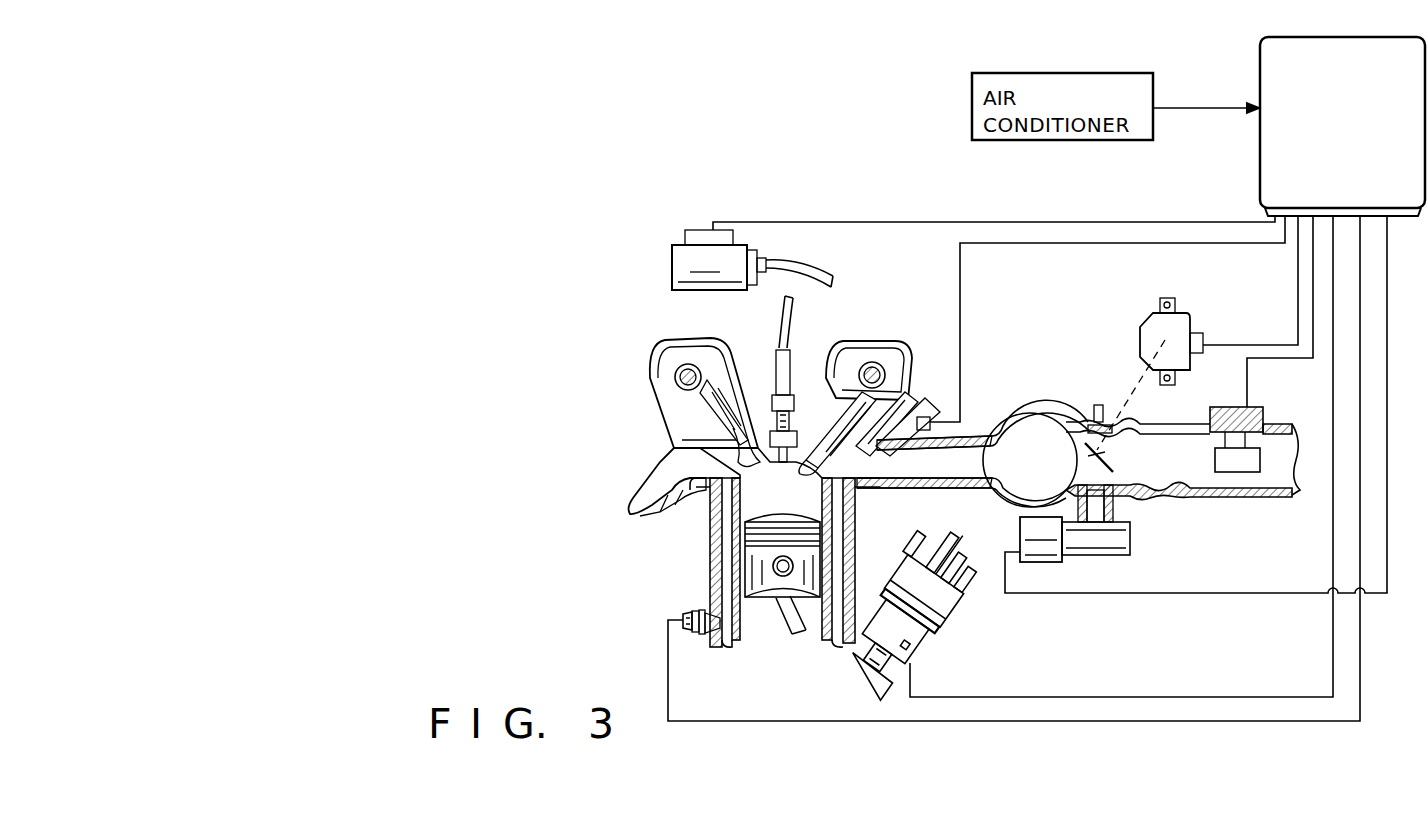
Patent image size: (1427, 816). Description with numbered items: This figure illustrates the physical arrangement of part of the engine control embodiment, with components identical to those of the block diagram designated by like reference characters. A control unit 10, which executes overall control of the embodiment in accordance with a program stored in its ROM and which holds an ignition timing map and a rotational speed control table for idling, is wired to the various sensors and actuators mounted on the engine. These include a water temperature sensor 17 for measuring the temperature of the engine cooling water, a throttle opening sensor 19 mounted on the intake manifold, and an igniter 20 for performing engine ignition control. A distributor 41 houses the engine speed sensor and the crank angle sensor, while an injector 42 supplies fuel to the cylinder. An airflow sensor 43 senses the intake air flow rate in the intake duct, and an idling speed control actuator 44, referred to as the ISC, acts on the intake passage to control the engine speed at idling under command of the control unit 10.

The control unit 10 is at (1263, 46).
The water temperature sensor 17 is at (692, 612).
The throttle opening sensor 19 is at (1190, 316).
The igniter 20 is at (672, 255).
The distributor 41 is at (925, 642).
The injector 42 is at (930, 416).
The airflow sensor 43 is at (1270, 412).
The idling speed control actuator 44 is at (1020, 522).